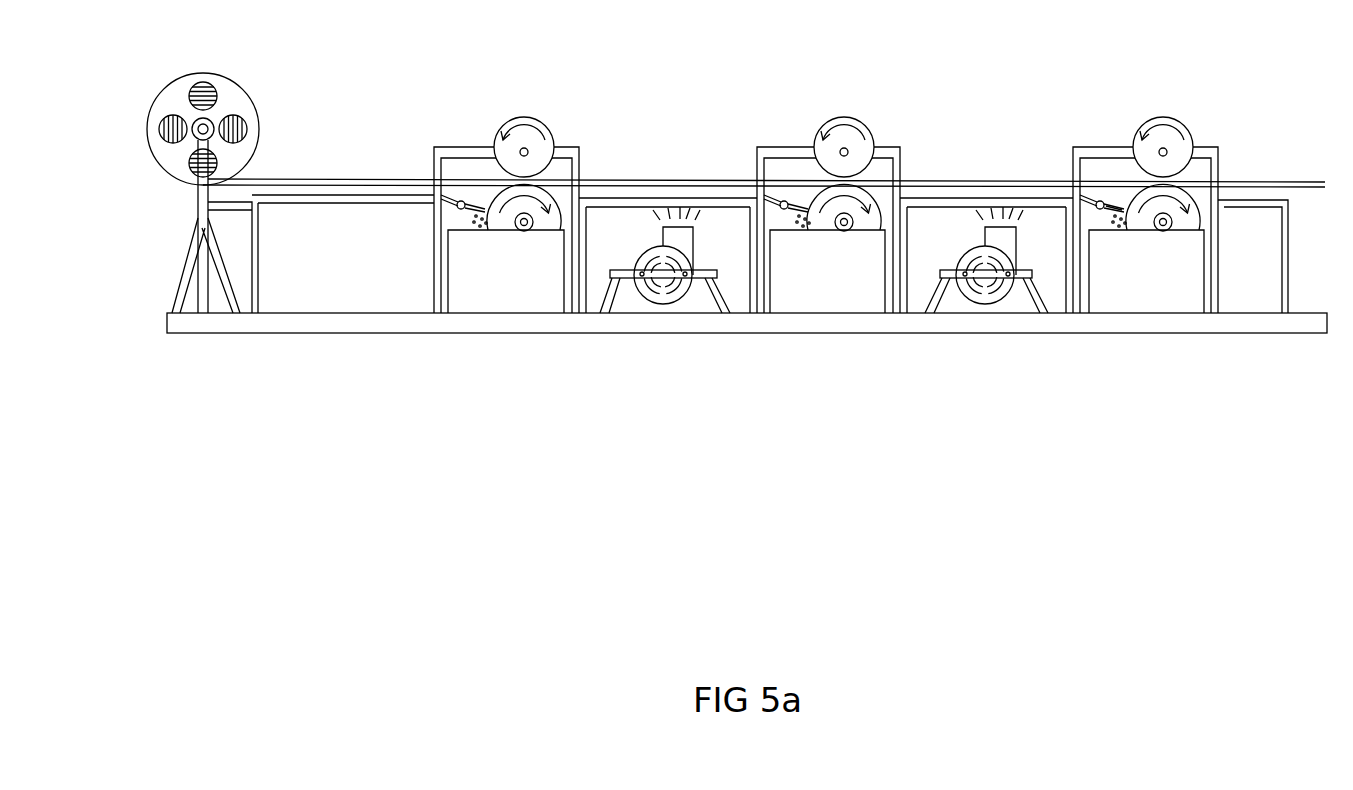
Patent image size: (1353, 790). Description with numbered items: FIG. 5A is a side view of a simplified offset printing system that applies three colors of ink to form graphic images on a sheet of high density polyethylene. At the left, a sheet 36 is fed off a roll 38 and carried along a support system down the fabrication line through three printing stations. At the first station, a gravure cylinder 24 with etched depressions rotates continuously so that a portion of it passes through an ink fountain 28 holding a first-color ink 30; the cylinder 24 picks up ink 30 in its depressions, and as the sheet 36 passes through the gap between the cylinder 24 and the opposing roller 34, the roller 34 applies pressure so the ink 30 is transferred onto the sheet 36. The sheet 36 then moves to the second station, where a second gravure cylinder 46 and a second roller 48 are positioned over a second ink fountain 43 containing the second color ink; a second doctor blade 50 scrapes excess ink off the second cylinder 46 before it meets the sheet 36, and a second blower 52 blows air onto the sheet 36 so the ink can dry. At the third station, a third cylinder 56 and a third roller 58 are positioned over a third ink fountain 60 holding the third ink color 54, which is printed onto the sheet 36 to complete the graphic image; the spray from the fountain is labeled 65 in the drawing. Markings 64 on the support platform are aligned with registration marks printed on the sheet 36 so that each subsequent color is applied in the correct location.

The roll 38 is at (226, 72).
The sheet of material 36 is at (983, 180).
The markings 64 is at (415, 198).
The second blower 52 is at (680, 248).
The roller 34 is at (541, 118).
The gravure cylinder 24 is at (553, 193).
The ink fountain 28 is at (523, 290).
The ink 30 is at (485, 208).
The second roller 48 is at (862, 120).
The second gravure cylinder 46 is at (868, 192).
The second ink fountain 43 is at (840, 290).
The second doctor blade 50 is at (772, 199).
The third roller 58 is at (1180, 120).
The third cylinder 56 is at (1190, 193).
The third ink fountain 60 is at (1161, 290).
The nozzle 65 is at (1112, 207).
The third ink color 54 is at (1118, 222).